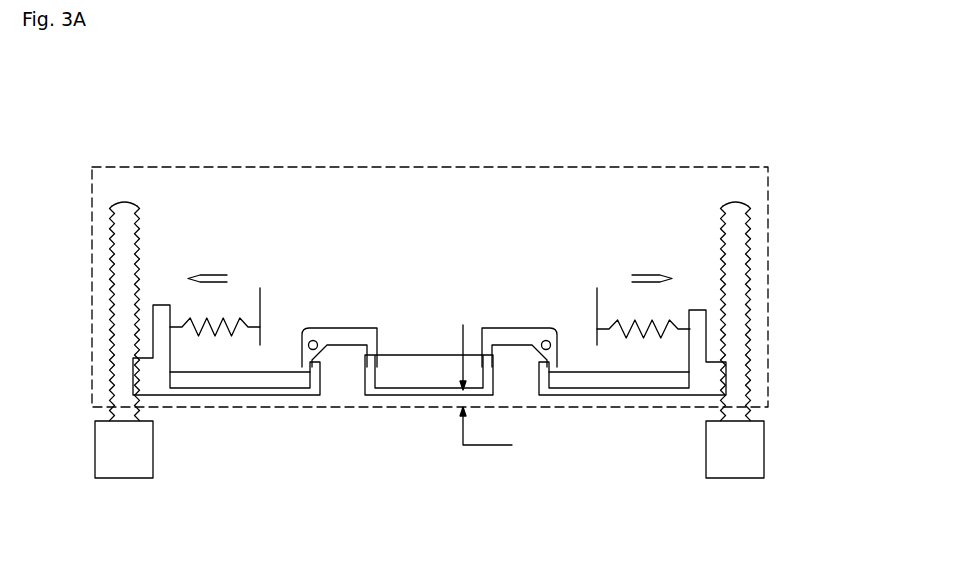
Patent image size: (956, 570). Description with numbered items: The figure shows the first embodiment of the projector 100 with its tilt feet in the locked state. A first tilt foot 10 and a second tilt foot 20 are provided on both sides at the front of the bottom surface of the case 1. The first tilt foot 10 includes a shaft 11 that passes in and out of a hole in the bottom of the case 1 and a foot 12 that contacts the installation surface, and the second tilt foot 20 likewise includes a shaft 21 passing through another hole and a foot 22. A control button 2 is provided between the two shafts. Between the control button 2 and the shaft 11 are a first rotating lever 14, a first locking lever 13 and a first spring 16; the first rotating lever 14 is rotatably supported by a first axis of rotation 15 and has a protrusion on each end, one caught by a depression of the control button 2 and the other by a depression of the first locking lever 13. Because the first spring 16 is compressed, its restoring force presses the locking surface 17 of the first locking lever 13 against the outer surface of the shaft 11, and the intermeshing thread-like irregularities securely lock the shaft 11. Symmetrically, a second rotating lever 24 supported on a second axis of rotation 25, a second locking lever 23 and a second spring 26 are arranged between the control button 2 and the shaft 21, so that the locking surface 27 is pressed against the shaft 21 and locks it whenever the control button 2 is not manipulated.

The projector 100 is at (577, 156).
The case 1 is at (433, 167).
The control button 2 is at (398, 383).
The first tilt foot 10 is at (748, 268).
The shaft 11 is at (737, 205).
The foot 12 is at (735, 468).
The first locking lever 13 is at (619, 383).
The first rotating lever 14 is at (497, 330).
The first axis of rotation 15 is at (545, 340).
The first spring 16 is at (650, 326).
The locking surface 17 is at (747, 377).
The second tilt foot 20 is at (116, 270).
The shaft 21 is at (126, 205).
The foot 22 is at (123, 468).
The second locking lever 23 is at (237, 383).
The second rotating lever 24 is at (356, 330).
The second axis of rotation 25 is at (308, 340).
The second spring 26 is at (243, 324).
The locking surface 27 is at (116, 378).